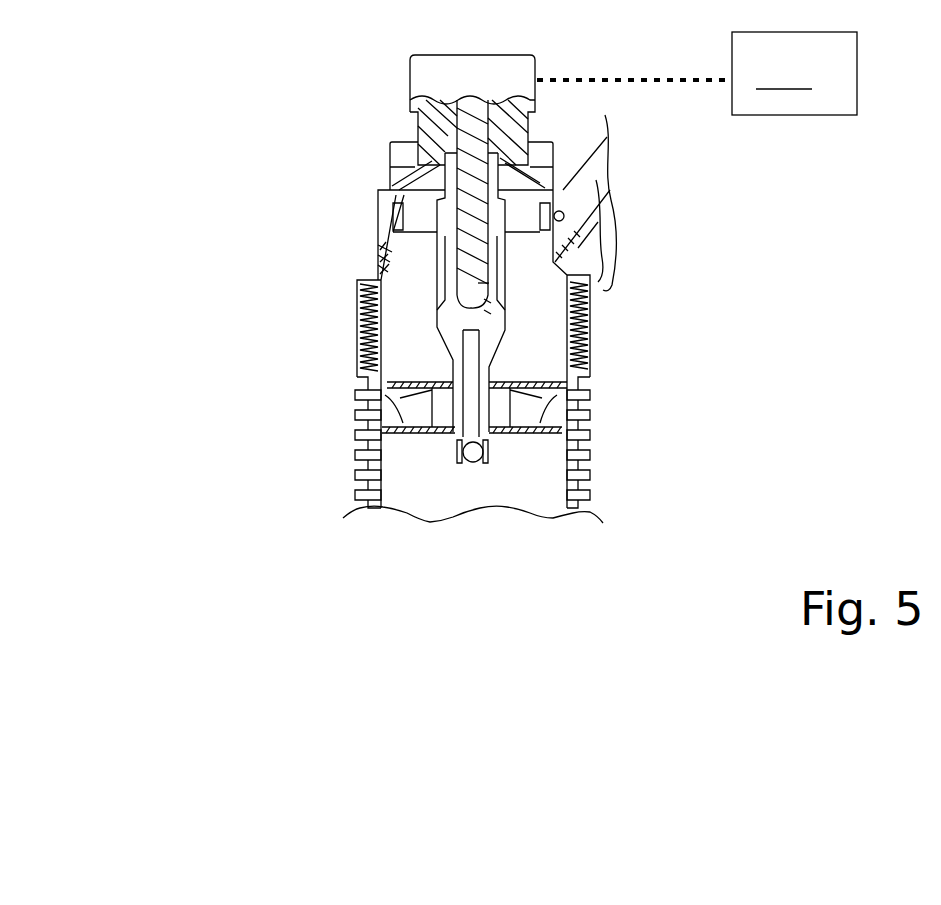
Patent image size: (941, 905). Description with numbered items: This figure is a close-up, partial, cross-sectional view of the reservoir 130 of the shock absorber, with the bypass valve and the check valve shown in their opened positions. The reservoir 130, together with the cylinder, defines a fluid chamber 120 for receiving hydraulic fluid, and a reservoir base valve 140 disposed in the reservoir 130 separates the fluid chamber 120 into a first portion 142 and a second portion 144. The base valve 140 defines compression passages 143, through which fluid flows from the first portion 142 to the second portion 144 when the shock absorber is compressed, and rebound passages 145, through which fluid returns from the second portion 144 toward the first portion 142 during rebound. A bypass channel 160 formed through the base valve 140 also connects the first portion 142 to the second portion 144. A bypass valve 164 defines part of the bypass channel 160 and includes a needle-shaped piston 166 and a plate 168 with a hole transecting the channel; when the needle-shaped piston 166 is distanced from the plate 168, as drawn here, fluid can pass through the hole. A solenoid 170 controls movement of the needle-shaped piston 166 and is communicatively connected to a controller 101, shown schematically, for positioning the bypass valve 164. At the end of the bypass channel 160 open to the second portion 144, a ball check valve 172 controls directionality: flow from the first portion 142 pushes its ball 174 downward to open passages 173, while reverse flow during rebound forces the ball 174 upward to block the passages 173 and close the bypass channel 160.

The controller 101 is at (697, 73).
The fluid chamber 120 is at (393, 258).
The reservoir 130 is at (380, 227).
The reservoir base valve 140 is at (533, 440).
The first portion 142 is at (403, 322).
The compression passages 143 is at (392, 415).
The second portion 144 is at (420, 500).
The rebound passages 145 is at (557, 405).
The bypass channel 160 is at (428, 278).
The bypass valve 164 is at (490, 301).
The needle-shaped piston 166 is at (485, 290).
The plate 168 is at (490, 311).
The solenoid 170 is at (500, 80).
The check valve 172 is at (447, 462).
The passages 173 is at (447, 438).
The ball 174 is at (480, 463).